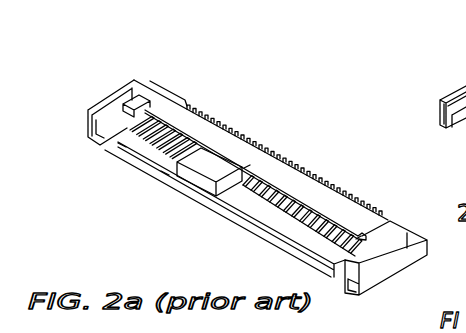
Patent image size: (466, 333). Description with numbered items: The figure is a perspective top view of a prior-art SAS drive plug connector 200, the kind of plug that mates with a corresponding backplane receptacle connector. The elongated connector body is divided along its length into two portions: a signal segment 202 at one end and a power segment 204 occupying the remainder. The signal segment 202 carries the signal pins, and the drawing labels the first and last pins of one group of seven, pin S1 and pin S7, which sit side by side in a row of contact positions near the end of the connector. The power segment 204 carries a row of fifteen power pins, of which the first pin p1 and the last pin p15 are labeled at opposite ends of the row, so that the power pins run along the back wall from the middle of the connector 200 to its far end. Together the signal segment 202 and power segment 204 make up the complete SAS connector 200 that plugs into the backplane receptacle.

The SAS drive plug connector 200 is at (257, 155).
The signal segment 202 is at (117, 144).
The power segment 204 is at (105, 153).
The signal pin S1 is at (123, 148).
The signal pin S7 is at (165, 174).
The power pin p1 is at (247, 167).
The power pin p15 is at (358, 238).